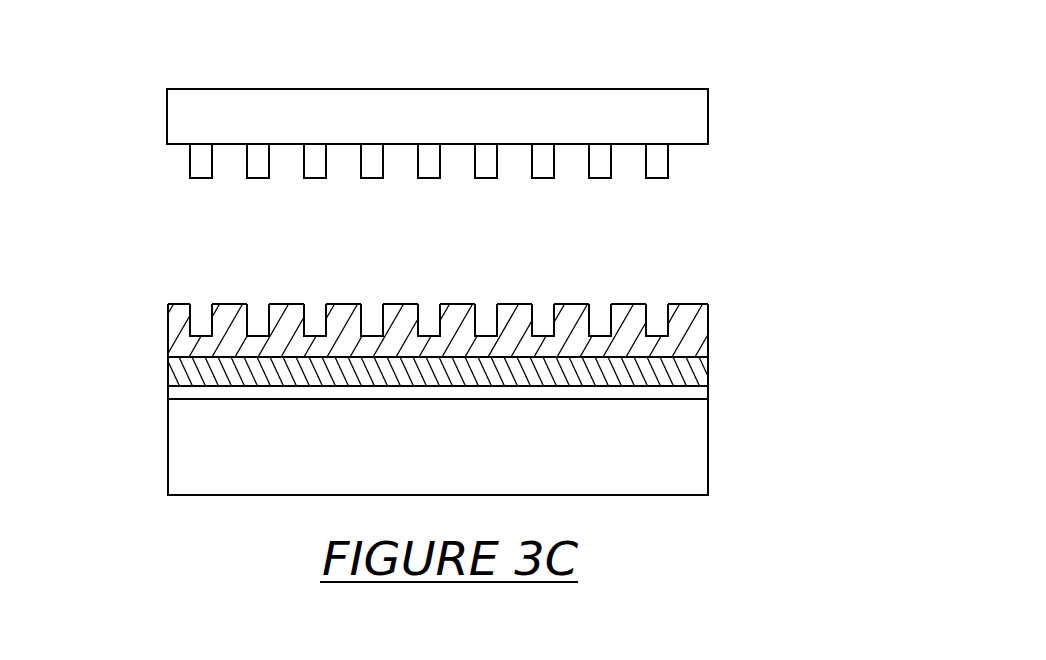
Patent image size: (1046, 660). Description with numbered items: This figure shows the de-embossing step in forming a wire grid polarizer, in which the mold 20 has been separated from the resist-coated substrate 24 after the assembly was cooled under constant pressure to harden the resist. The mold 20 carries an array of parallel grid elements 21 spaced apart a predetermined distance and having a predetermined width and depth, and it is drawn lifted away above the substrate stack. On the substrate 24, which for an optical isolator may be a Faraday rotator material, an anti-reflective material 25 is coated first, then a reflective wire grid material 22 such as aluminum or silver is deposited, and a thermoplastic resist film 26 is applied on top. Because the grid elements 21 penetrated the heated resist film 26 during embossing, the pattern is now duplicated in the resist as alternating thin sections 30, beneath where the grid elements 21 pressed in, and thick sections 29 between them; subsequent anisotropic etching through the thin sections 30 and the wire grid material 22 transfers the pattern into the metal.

The mold 20 is at (398, 142).
The grid elements 21 is at (256, 165).
The wire grid material 22 is at (172, 373).
The substrate 24 is at (182, 467).
The anti-reflective material 25 is at (697, 393).
The resist film 26 is at (453, 286).
The thick sections 29 is at (228, 304).
The thin sections 30 is at (539, 336).